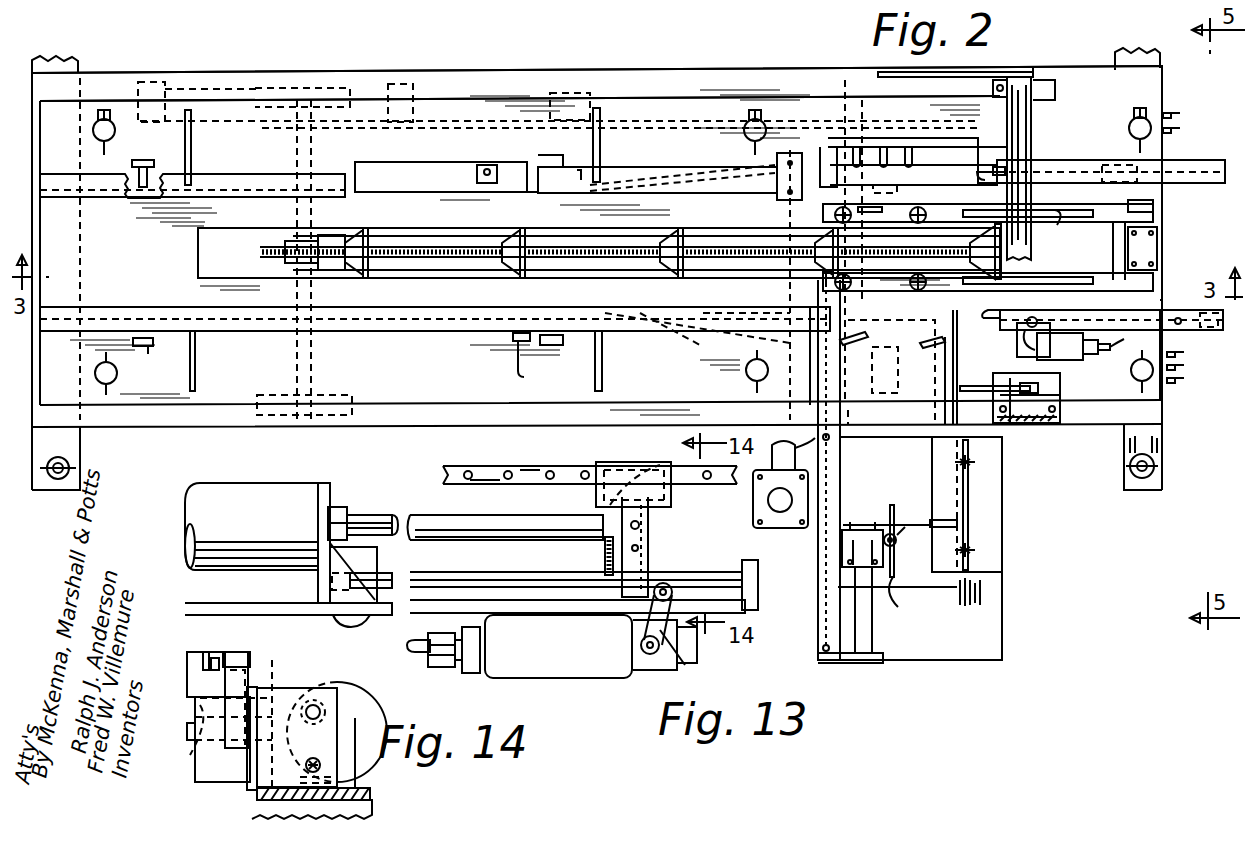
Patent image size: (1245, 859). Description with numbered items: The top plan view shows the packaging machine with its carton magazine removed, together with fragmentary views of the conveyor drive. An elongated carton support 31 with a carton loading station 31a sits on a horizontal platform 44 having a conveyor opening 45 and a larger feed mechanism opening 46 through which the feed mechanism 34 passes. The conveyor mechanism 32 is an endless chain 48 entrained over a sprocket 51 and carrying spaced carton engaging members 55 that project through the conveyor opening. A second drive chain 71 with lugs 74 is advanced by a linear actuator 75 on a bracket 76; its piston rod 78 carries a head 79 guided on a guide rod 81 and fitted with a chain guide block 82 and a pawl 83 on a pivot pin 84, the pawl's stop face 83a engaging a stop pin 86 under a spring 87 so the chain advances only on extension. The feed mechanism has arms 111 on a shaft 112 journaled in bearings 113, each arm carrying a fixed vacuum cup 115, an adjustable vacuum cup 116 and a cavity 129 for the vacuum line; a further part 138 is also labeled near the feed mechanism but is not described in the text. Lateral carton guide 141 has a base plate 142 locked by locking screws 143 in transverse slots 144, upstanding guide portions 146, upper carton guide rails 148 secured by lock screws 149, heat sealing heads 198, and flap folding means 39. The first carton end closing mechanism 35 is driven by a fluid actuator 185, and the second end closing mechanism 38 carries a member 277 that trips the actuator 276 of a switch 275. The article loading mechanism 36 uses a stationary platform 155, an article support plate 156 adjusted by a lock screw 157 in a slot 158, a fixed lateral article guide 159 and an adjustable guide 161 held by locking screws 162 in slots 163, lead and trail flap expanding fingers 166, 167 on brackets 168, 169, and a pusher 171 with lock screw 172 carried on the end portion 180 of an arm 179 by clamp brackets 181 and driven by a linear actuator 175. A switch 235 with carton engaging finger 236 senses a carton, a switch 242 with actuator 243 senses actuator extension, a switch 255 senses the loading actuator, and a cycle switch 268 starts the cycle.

In FIG. 2, the carton support 31 is at (577, 295).
In FIG. 2, the carton loading station 31a is at (945, 199).
In FIG. 2, the conveyor mechanism 32 is at (463, 245).
In FIG. 2, the feed mechanism 34 is at (825, 212).
In FIG. 2, the first carton end closing mechanism 35 is at (1062, 154).
In FIG. 2, the article loading mechanism 36 is at (965, 533).
In FIG. 2, the second end closing mechanism 38 is at (1057, 306).
In FIG. 2, the flap folding means 39 is at (685, 343).
In FIG. 2, the platform 44 is at (123, 245).
In FIG. 2, the conveyor opening 45 is at (233, 279).
In FIG. 2, the feed mechanism opening 46 is at (990, 167).
In FIG. 2, the endless chain 48 is at (410, 244).
In FIG. 2, the sprocket 51 is at (285, 244).
In FIG. 2, the carton engaging members 55 is at (522, 237).
In FIG. 2, the drive chain 71 is at (650, 126).
In FIG. 13, the drive chain 71 is at (511, 476).
In FIG. 14, the drive chain 71 is at (207, 659).
In FIG. 13, the lugs 74 is at (692, 478).
In FIG. 14, the lugs 74 is at (248, 662).
In FIG. 13, the linear actuator 75 is at (239, 491).
In FIG. 14, the linear actuator 75 is at (324, 683).
In FIG. 13, the bracket 76 is at (222, 605).
In FIG. 14, the bracket 76 is at (372, 800).
In FIG. 13, the piston rod 78 is at (368, 514).
In FIG. 14, the piston rod 78 is at (320, 710).
In FIG. 13, the head 79 is at (646, 565).
In FIG. 13, the guide rod 81 is at (473, 581).
In FIG. 14, the guide rod 81 is at (320, 765).
In FIG. 13, the chain guide block 82 is at (596, 497).
In FIG. 13, the pawl 83 is at (660, 466).
In FIG. 14, the pawl 83 is at (250, 668).
In FIG. 13, the stop face 83a is at (620, 616).
In FIG. 13, the pivot pin 84 is at (639, 526).
In FIG. 14, the pivot pin 84 is at (190, 741).
In FIG. 13, the stop pin 86 is at (638, 549).
In FIG. 13, the spring 87 is at (605, 556).
In FIG. 2, the arms 111 is at (1097, 231).
In FIG. 2, the shaft 112 is at (1157, 243).
In FIG. 2, the bearings 113 is at (1152, 207).
In FIG. 2, the fixed vacuum cup 115 is at (820, 283).
In FIG. 2, the adjustable vacuum cup 116 is at (930, 291).
In FIG. 2, the cavity 129 is at (1062, 227).
In FIG. 2, the slotted plate 138 is at (906, 166).
In FIG. 2, the lateral carton guide 141 is at (485, 99).
In FIG. 2, the base plate 142 is at (632, 107).
In FIG. 2, the locking screws 143 is at (110, 122).
In FIG. 2, the transverse slots 144 is at (104, 116).
In FIG. 2, the lateral carton guide portions 146 is at (198, 196).
In FIG. 2, the upper carton guide rails 148 is at (171, 308).
In FIG. 2, the lock screws 149 is at (146, 349).
In FIG. 2, the stationary platform 155 is at (986, 615).
In FIG. 2, the article support plate 156 is at (928, 596).
In FIG. 2, the lock screw 157 is at (895, 545).
In FIG. 2, the slot 158 is at (905, 589).
In FIG. 2, the fixed lateral article guide 159 is at (820, 606).
In FIG. 2, the laterally adjustable guide 161 is at (956, 494).
In FIG. 2, the locking screws 162 is at (968, 463).
In FIG. 2, the slots 163 is at (958, 474).
In FIG. 2, the lead flap expanding finger 166 is at (853, 336).
In FIG. 2, the trail flap expanding finger 167 is at (938, 339).
In FIG. 2, the bracket 168 is at (820, 373).
In FIG. 2, the bracket 169 is at (953, 369).
In FIG. 2, the pusher 171 is at (888, 526).
In FIG. 2, the lock screw 172 is at (908, 516).
In FIG. 2, the linear actuator 175 is at (820, 414).
In FIG. 2, the arm 179 is at (868, 664).
In FIG. 2, the end portion 180 is at (875, 609).
In FIG. 2, the clamp brackets 181 is at (864, 521).
In FIG. 2, the fluid actuator 185 is at (1170, 176).
In FIG. 2, the heat sealing heads 198 is at (420, 179).
In FIG. 2, the switch 235 is at (895, 185).
In FIG. 2, the carton engaging finger 236 is at (870, 207).
In FIG. 13, the switch 242 is at (535, 661).
In FIG. 13, the actuator 243 is at (686, 656).
In FIG. 2, the switch 255 is at (879, 391).
In FIG. 13, the cycle switch 268 is at (780, 516).
In FIG. 2, the switch 275 is at (1068, 353).
In FIG. 2, the actuator 276 is at (1037, 314).
In FIG. 2, the member 277 is at (1183, 313).